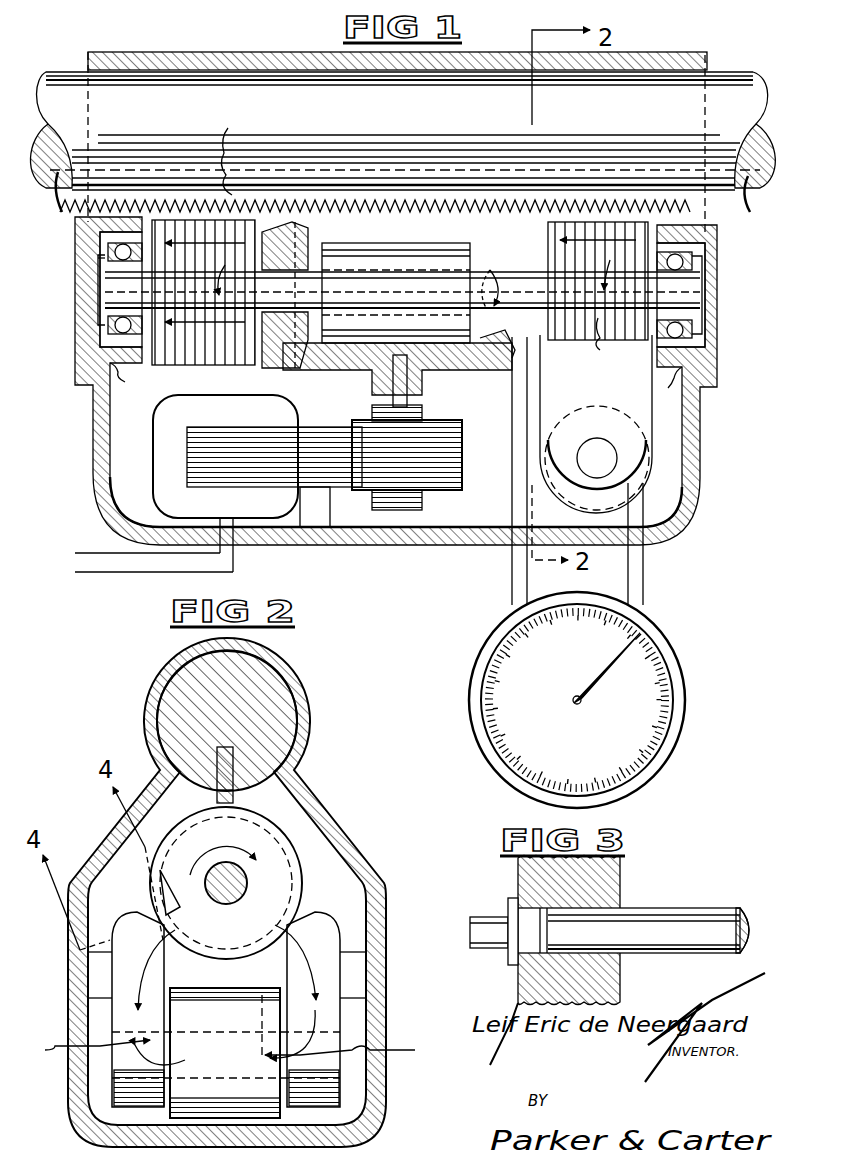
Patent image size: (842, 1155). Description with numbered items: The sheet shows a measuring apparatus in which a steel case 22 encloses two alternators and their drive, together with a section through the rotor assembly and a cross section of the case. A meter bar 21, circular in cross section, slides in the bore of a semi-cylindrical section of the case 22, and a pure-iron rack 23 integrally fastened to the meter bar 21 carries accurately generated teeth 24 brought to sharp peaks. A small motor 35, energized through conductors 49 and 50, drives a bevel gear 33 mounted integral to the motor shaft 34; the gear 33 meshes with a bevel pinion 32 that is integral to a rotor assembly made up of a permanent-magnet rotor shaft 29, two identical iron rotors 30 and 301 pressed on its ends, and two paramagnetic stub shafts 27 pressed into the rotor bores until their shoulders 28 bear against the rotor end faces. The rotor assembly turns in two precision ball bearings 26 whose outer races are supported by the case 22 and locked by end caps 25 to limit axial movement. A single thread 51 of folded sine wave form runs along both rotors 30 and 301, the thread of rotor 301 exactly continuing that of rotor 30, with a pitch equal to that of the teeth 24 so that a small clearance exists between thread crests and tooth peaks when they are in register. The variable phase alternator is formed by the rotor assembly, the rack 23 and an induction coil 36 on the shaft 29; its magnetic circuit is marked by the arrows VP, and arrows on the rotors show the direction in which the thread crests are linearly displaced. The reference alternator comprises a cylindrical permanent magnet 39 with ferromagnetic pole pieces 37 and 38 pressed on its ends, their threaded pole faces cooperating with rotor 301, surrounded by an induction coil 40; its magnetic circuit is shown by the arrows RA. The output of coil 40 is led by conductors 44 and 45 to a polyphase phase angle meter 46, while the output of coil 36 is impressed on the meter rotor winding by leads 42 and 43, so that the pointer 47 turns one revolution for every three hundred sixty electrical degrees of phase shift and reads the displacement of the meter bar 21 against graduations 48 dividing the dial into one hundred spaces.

In FIG. 1, the meter bar 21 is at (72, 68).
In FIG. 2, the meter bar 21 is at (300, 690).
In FIG. 1, the case 22 is at (250, 58).
In FIG. 2, the case 22 is at (146, 722).
In FIG. 1, the rack 23 is at (58, 192).
In FIG. 2, the rack 23 is at (236, 790).
In FIG. 1, the teeth 24 is at (64, 212).
In FIG. 2, the teeth 24 is at (217, 800).
In FIG. 1, the end caps 25 is at (100, 296).
In FIG. 1, the ball bearings 26 is at (122, 368).
In FIG. 1, the stub shafts 27 is at (115, 285).
In FIG. 3, the stub shafts 27 is at (490, 920).
In FIG. 3, the shoulders 28 is at (508, 960).
In FIG. 1, the rotor shaft 29 is at (536, 282).
In FIG. 2, the rotor shaft 29 is at (248, 883).
In FIG. 3, the rotor shaft 29 is at (690, 920).
In FIG. 1, the rotor 30 is at (230, 364).
In FIG. 3, the rotor 30 is at (610, 876).
In FIG. 1, the rotor 301 is at (550, 240).
In FIG. 2, the rotor 301 is at (292, 870).
In FIG. 1, the bevel pinion 32 is at (290, 255).
In FIG. 1, the bevel gear 33 is at (320, 371).
In FIG. 1, the motor shaft 34 is at (408, 398).
In FIG. 1, the motor 35 is at (452, 456).
In FIG. 1, the induction coil 36 is at (446, 232).
In FIG. 1, the pole piece 37 is at (582, 470).
In FIG. 2, the pole piece 37 is at (352, 914).
In FIG. 2, the pole piece 38 is at (140, 918).
In FIG. 1, the permanent magnet 39 is at (600, 456).
In FIG. 2, the permanent magnet 39 is at (264, 980).
In FIG. 1, the induction coil 40 is at (645, 445).
In FIG. 2, the induction coil 40 is at (222, 990).
In FIG. 1, the lead 42 is at (508, 572).
In FIG. 1, the lead 43 is at (530, 595).
In FIG. 1, the conductor 44 is at (626, 557).
In FIG. 1, the conductor 45 is at (643, 560).
In FIG. 1, the phase angle meter 46 is at (684, 714).
In FIG. 1, the pointer 47 is at (596, 678).
In FIG. 1, the graduations 48 is at (652, 773).
In FIG. 1, the conductor 49 is at (82, 554).
In FIG. 1, the conductor 50 is at (95, 572).
In FIG. 1, the thread 51 is at (174, 362).
In FIG. 2, the thread 51 is at (150, 872).
In FIG. 3, the thread 51 is at (612, 990).
In FIG. 1, the magnetic circuit arrows of the V.P. alternator VP is at (421, 236).
In FIG. 2, the magnetic circuit arrows of the reference alternator RA is at (228, 1050).